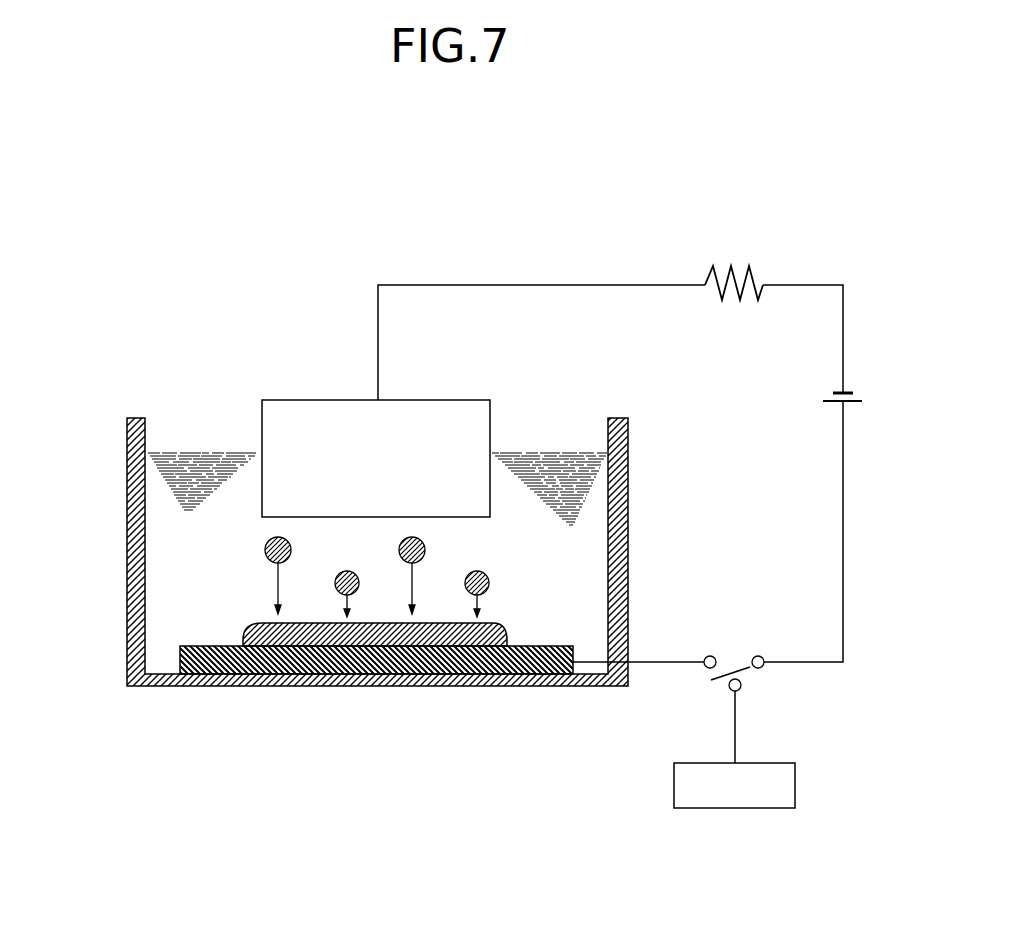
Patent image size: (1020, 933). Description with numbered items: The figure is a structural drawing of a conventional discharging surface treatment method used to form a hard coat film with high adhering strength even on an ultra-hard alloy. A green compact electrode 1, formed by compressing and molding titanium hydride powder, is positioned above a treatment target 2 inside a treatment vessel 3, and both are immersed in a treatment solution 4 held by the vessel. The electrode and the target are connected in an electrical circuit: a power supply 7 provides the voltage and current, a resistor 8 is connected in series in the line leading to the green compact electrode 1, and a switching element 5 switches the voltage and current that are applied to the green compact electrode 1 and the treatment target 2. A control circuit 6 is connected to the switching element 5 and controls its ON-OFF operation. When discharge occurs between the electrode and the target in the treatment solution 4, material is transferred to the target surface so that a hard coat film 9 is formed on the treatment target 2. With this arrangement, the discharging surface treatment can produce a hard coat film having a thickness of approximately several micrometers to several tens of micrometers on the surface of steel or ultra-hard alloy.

The green compact electrode 1 is at (310, 400).
The treatment target 2 is at (216, 655).
The treatment vessel 3 is at (132, 418).
The treatment solution 4 is at (160, 579).
The switching element 5 is at (748, 678).
The control circuit 6 is at (763, 810).
The power supply 7 is at (853, 385).
The resistor 8 is at (737, 265).
The hard coat film 9 is at (396, 638).